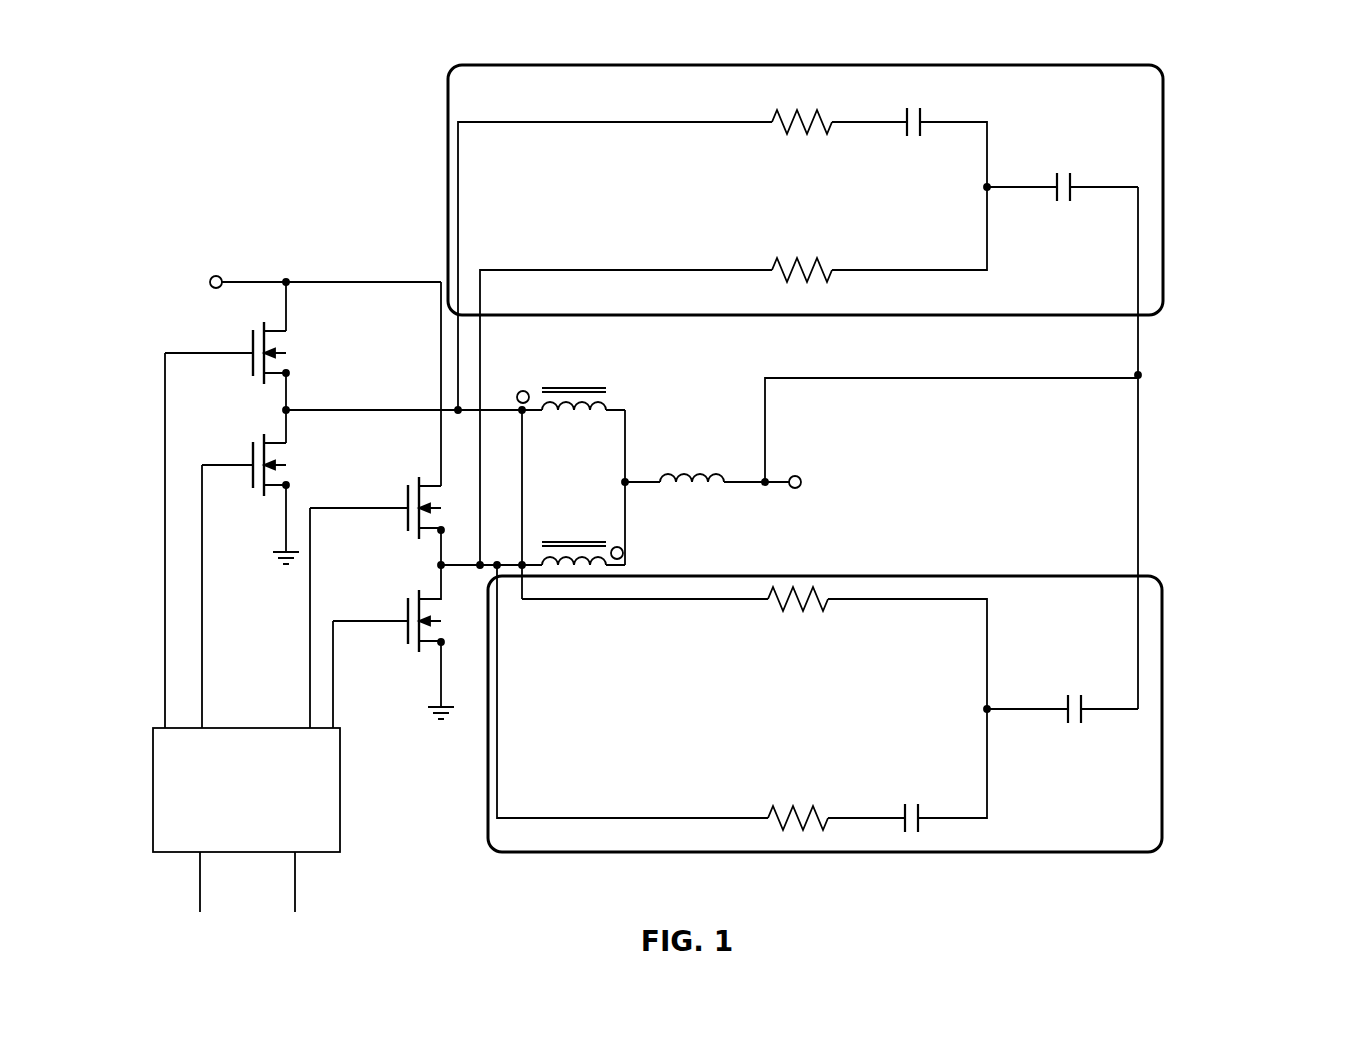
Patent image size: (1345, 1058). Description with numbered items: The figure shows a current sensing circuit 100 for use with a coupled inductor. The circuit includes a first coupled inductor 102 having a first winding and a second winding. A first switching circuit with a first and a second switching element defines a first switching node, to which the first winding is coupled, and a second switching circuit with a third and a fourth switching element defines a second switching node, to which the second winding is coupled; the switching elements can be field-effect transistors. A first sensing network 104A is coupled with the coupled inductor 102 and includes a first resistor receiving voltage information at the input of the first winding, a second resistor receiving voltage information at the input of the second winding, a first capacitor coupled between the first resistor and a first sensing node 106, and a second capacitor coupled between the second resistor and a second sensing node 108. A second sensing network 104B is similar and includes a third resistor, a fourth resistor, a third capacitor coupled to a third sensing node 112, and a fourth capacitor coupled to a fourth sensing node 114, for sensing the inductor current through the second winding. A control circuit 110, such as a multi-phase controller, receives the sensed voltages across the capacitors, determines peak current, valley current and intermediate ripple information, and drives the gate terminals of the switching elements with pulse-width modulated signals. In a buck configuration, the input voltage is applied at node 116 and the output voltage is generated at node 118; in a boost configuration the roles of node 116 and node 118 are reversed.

The current sensing circuit 100 is at (1262, 107).
The first coupled inductor 102 is at (640, 384).
The first sensing network 104A is at (1157, 578).
The second sensing network 104B is at (1163, 73).
The first sensing node 106 is at (1118, 708).
The second sensing node 108 is at (1042, 708).
The control circuit 110 is at (236, 727).
The third sensing node 112 is at (1108, 186).
The fourth sensing node 114 is at (1032, 186).
The node 116 is at (213, 276).
The node 118 is at (800, 476).